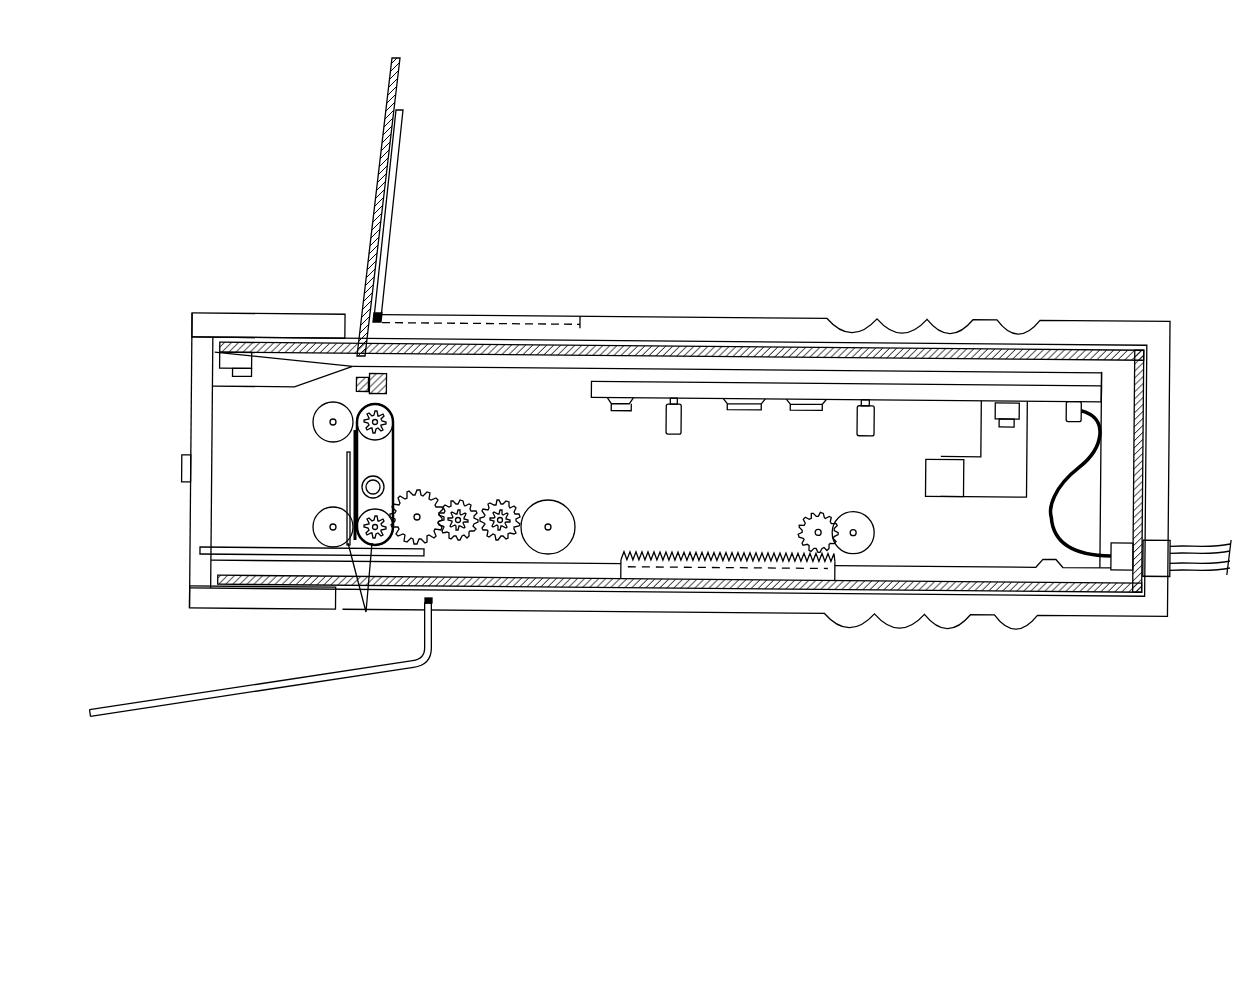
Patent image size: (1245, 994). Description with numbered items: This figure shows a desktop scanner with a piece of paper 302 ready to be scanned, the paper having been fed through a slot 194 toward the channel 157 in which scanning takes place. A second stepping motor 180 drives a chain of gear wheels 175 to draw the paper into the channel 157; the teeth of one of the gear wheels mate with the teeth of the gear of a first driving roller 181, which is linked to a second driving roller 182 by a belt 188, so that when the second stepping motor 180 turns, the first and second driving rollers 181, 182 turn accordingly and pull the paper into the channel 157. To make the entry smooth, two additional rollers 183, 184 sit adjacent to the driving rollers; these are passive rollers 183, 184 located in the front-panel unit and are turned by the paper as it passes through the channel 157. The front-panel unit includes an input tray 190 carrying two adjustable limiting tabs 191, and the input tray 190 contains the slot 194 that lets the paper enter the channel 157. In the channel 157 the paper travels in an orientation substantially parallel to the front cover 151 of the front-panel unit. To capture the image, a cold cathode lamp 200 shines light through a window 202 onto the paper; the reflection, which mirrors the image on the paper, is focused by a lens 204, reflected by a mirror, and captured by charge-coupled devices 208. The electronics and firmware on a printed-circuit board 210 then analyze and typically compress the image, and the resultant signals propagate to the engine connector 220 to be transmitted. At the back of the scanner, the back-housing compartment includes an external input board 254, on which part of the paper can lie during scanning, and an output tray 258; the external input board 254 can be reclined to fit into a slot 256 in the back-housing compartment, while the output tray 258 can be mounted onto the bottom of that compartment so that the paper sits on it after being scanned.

The front cover 151 is at (200, 437).
The channel 157 is at (350, 605).
The chain of gear wheels 175 is at (468, 537).
The second stepping motor 180 is at (548, 540).
The first driving roller 181 is at (362, 612).
The second driving roller 182 is at (393, 417).
The passive roller 183 is at (317, 533).
The passive roller 184 is at (313, 420).
The belt 188 is at (391, 450).
The input tray 190 is at (278, 337).
The adjustable limiting tab 191 is at (242, 337).
The slot 194 is at (352, 322).
The cold cathode lamp 200 is at (385, 482).
The window 202 is at (353, 463).
The lens 204 is at (940, 468).
The charge-coupled devices 208 is at (661, 560).
The printed-circuit board 210 is at (786, 385).
The engine connector 220 is at (1123, 565).
The external input board 254 is at (395, 203).
The slot 256 is at (500, 320).
The output tray 258 is at (287, 680).
The piece of paper 302 is at (401, 80).